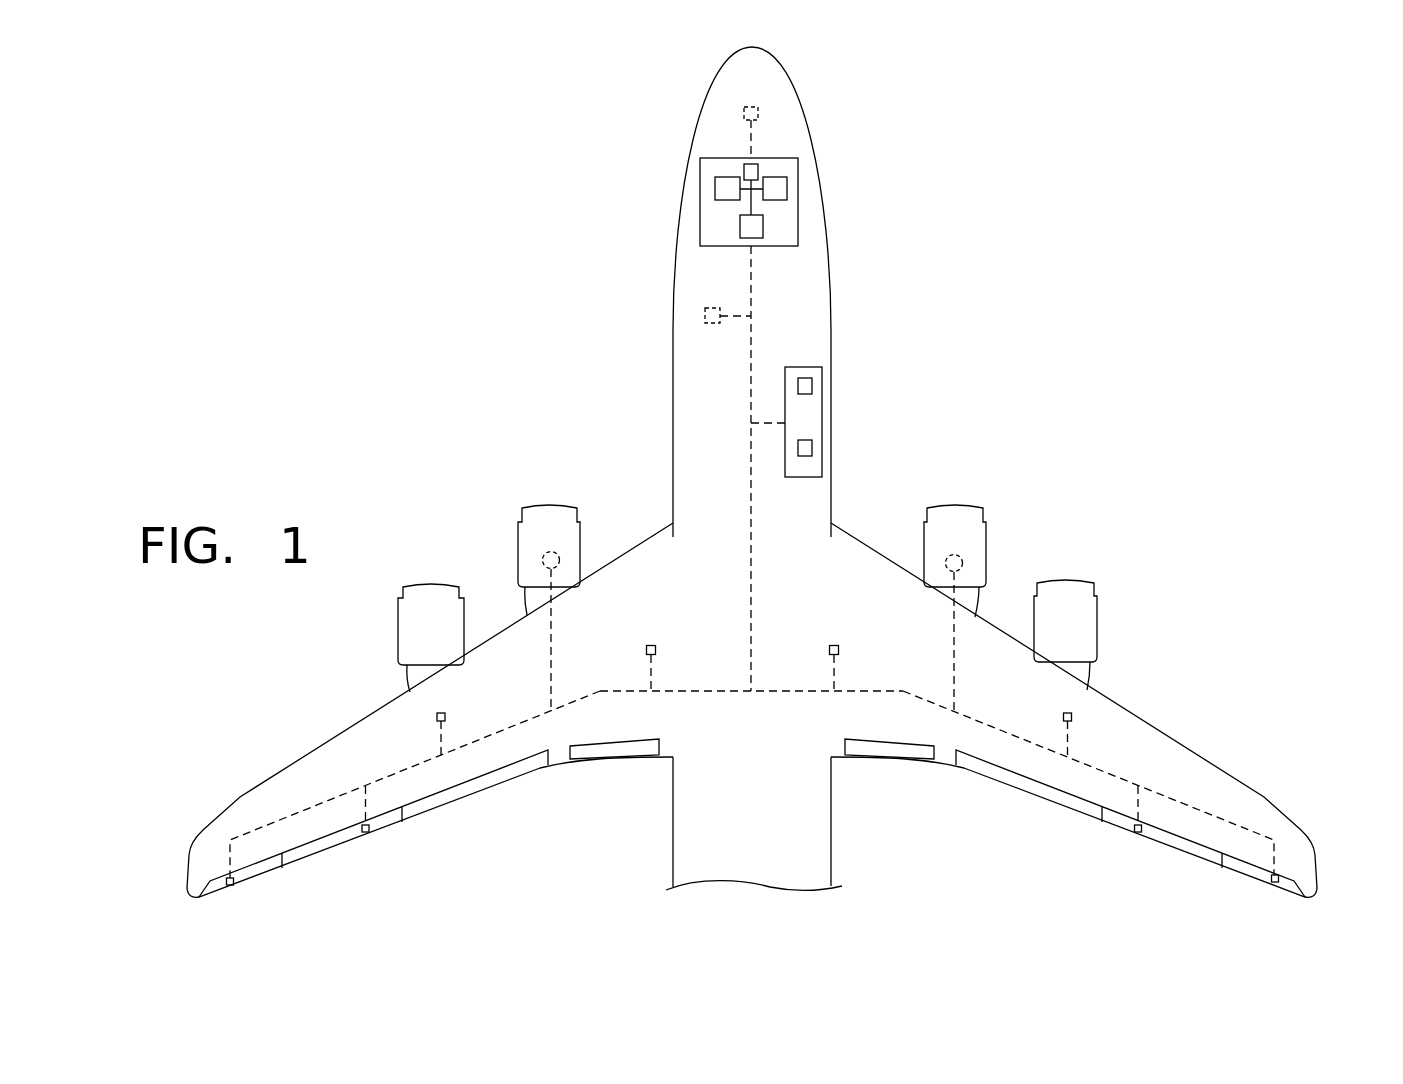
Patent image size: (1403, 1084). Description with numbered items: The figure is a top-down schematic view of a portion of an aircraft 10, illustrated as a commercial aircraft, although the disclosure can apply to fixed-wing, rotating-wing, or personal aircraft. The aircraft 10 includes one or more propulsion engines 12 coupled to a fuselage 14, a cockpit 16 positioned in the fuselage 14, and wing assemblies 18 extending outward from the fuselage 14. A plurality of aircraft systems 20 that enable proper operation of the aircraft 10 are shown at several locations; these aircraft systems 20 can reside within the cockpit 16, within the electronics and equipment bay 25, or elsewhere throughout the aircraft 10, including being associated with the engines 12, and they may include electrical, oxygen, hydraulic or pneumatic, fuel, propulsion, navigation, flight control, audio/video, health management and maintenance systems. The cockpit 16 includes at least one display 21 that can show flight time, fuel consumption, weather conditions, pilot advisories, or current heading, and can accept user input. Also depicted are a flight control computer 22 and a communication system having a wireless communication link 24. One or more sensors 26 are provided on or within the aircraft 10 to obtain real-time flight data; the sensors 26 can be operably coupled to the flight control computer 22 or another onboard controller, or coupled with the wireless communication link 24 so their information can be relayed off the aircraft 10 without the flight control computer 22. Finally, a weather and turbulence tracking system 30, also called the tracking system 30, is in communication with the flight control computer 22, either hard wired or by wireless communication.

The aircraft 10 is at (562, 77).
The propulsion engines 12 is at (430, 593).
The fuselage 14 is at (808, 282).
The cockpit 16 is at (777, 104).
The wing assemblies 18 is at (238, 797).
The aircraft systems 20 is at (743, 110).
The display 21 is at (743, 168).
The flight control computer 22 is at (773, 197).
The wireless communication link 24 is at (721, 194).
The electronics and equipment bay 25 is at (822, 408).
The sensors 26 is at (705, 315).
The weather and turbulence tracking system 30 is at (754, 206).